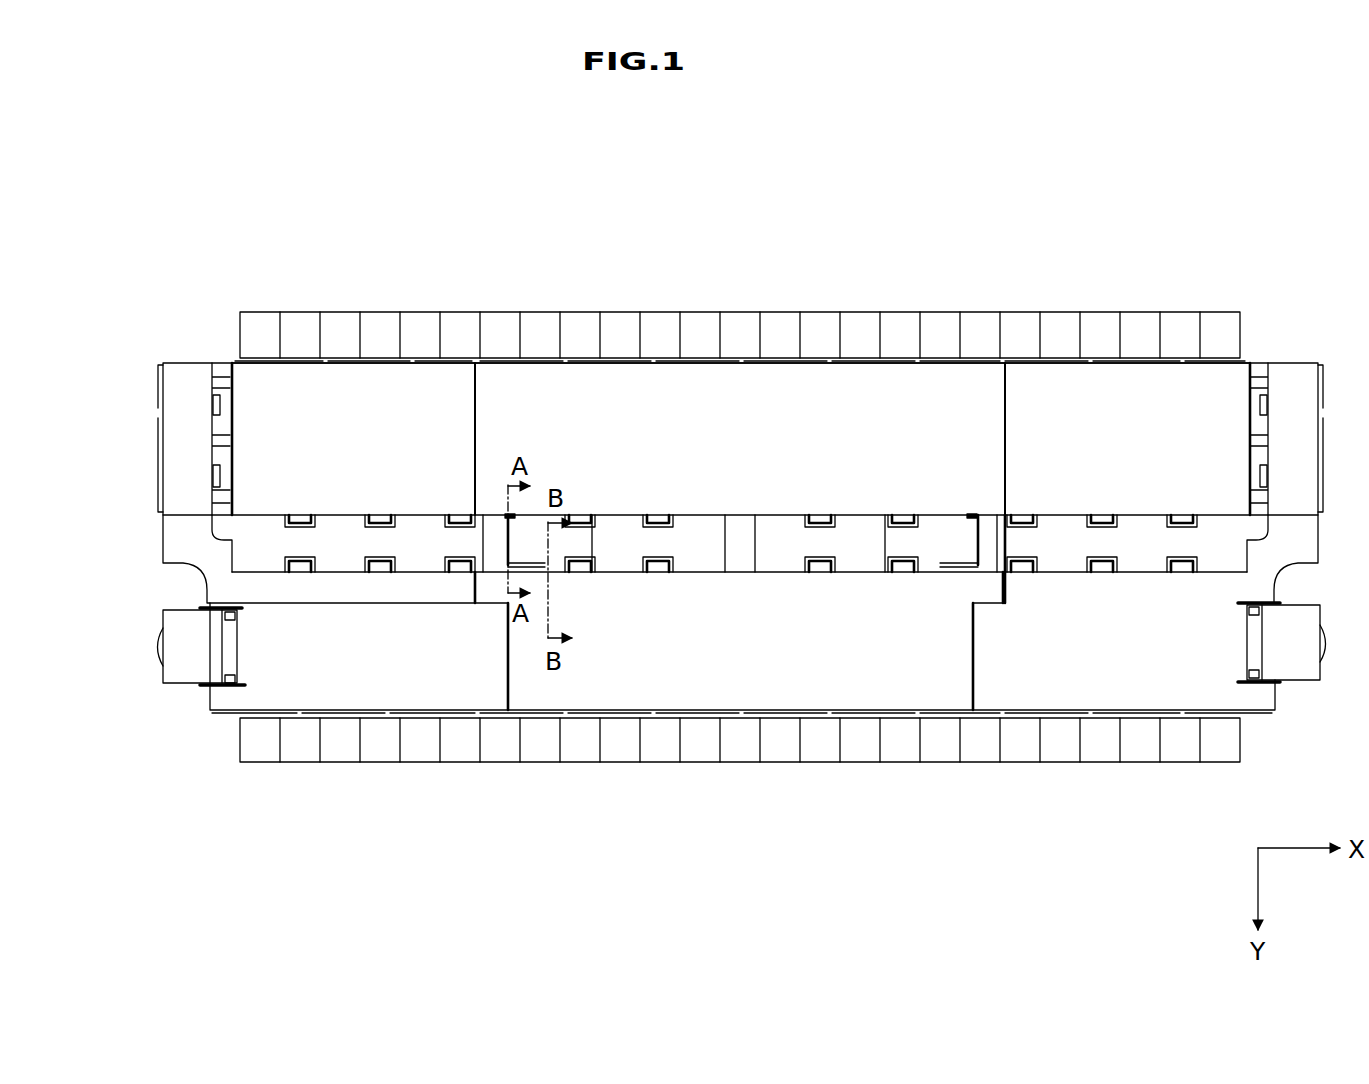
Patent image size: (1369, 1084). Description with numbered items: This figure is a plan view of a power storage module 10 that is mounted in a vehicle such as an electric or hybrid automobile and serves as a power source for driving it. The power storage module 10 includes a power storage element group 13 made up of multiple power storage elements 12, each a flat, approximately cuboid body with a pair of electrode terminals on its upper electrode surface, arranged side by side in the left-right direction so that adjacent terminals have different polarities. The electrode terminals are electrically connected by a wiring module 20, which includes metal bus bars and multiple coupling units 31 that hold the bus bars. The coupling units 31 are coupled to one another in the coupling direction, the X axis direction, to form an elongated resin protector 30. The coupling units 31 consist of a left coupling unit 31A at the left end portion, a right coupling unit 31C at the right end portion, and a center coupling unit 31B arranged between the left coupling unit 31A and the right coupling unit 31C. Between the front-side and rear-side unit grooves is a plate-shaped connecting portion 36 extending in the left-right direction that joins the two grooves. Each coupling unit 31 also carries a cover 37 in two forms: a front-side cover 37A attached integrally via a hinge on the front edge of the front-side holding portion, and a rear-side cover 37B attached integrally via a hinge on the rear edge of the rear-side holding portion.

The power storage module 10 is at (1292, 311).
The power storage element 12 is at (263, 748).
The power storage element group 13 is at (222, 812).
The wiring module 20 is at (262, 393).
The resin protector 30 is at (181, 343).
The coupling unit 31 is at (741, 332).
The left coupling unit 31A is at (422, 397).
The center coupling unit 31B is at (613, 386).
The right coupling unit 31C is at (1029, 383).
The connecting portion 36 is at (1222, 542).
The cover 37 is at (684, 524).
The front-side cover 37A is at (706, 644).
The rear-side cover 37B is at (265, 454).